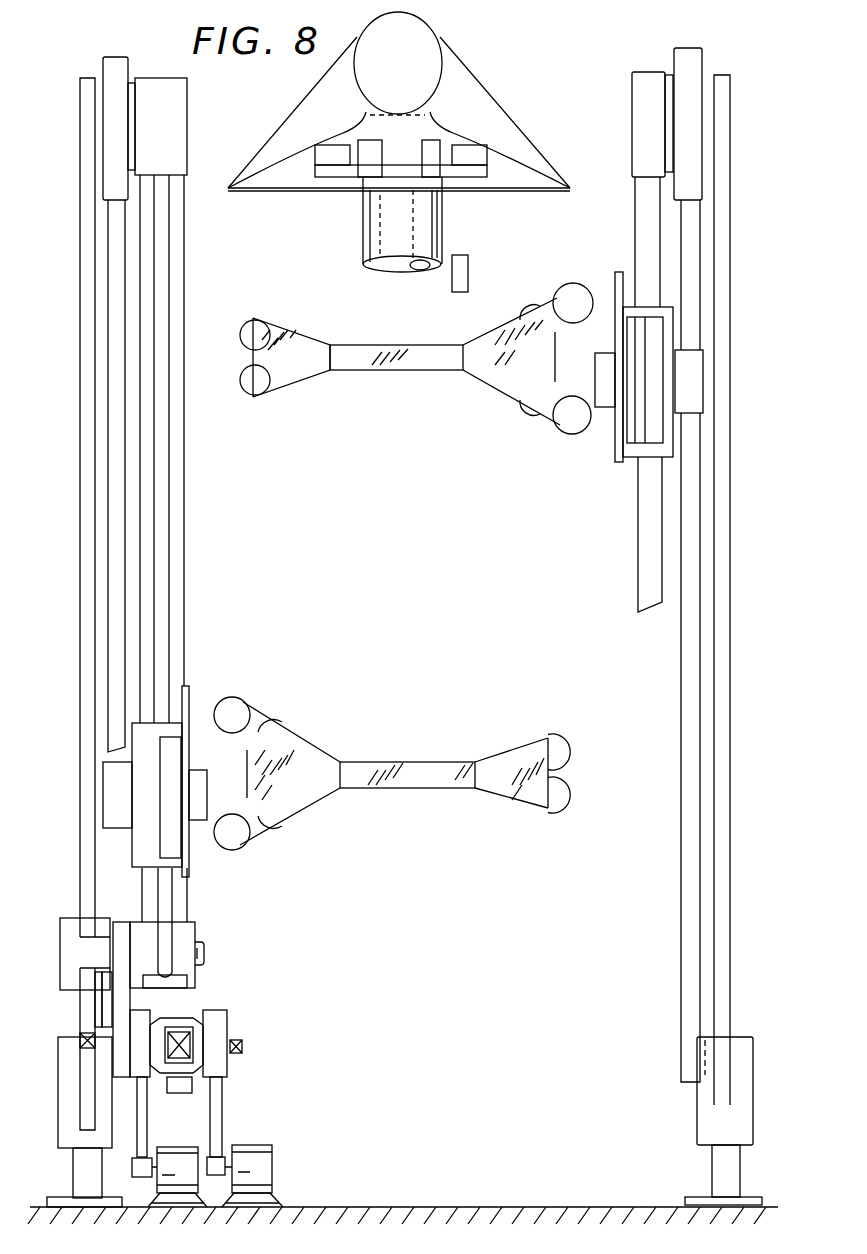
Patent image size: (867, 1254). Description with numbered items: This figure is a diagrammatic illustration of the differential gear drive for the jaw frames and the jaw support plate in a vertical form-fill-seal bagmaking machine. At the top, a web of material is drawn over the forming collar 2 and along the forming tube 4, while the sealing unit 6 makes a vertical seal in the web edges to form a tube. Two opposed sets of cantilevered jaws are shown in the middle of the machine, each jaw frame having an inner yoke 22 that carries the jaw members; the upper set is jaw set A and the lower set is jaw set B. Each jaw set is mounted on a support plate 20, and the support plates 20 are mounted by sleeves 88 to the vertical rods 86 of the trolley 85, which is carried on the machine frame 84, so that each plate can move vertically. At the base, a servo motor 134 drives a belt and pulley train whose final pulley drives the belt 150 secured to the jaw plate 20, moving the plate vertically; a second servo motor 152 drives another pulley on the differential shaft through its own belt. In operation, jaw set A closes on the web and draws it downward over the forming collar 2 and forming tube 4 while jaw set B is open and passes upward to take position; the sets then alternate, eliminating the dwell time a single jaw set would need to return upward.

The forming collar 2 is at (458, 72).
The forming tube 4 is at (433, 212).
The sealing unit 6 is at (468, 268).
The inner yoke 22 is at (492, 338).
The jaw set A is at (483, 404).
The jaw set B is at (481, 738).
The support plate 20 is at (190, 688).
The machine frame 84 is at (727, 230).
The trolley 85 is at (72, 756).
The vertical rod 86 is at (112, 192).
The sleeve 88 is at (105, 818).
The servo motor 134 is at (183, 1148).
The belt 150 is at (182, 612).
The servo motor 152 is at (253, 1148).